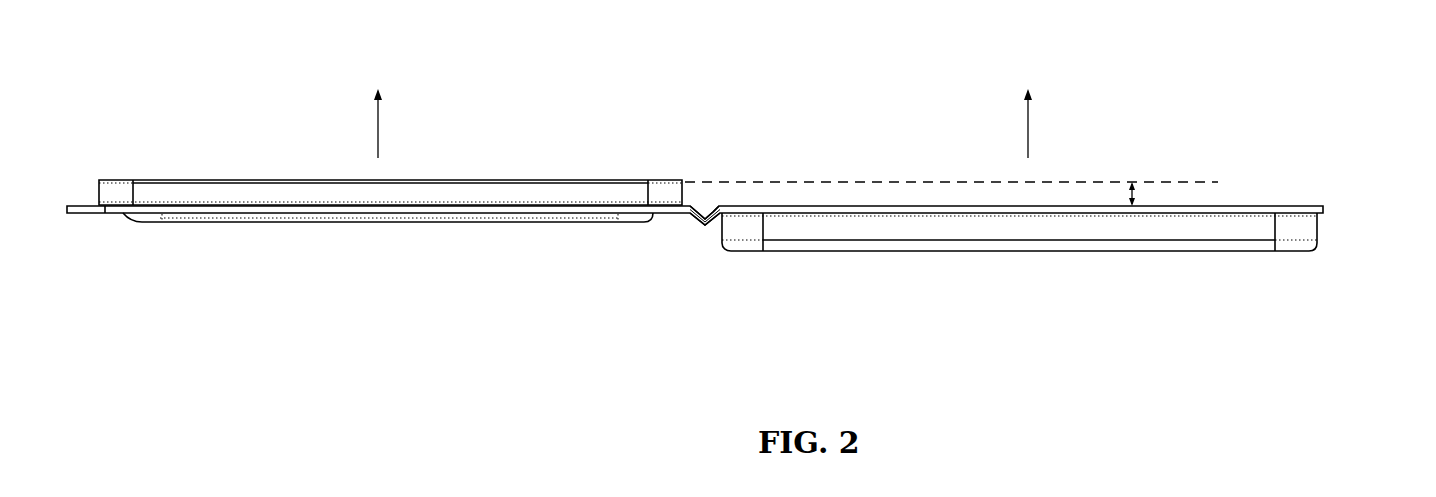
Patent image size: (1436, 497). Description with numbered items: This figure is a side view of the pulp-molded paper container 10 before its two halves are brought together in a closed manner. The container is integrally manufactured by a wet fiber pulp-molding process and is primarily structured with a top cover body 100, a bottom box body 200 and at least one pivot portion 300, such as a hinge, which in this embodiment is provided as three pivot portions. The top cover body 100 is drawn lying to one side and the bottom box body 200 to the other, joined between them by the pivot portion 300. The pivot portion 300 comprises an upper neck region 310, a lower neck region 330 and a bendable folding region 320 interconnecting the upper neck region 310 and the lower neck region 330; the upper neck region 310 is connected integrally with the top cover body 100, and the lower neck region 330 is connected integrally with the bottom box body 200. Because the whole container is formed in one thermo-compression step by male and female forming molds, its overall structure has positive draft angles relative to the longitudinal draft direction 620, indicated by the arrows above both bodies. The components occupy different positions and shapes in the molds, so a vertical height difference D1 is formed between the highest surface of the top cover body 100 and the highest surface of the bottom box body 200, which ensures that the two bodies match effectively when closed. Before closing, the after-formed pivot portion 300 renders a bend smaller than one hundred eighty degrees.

The pulp-molded paper container 10 is at (132, 57).
The top cover body 100 is at (1305, 210).
The bottom box body 200 is at (103, 181).
The pivot portion 300 is at (705, 216).
The upper neck region 310 is at (795, 149).
The bendable folding region 320 is at (795, 169).
The lower neck region 330 is at (795, 188).
The longitudinal draft direction 620 is at (701, 111).
The vertical height difference D1 is at (951, 196).